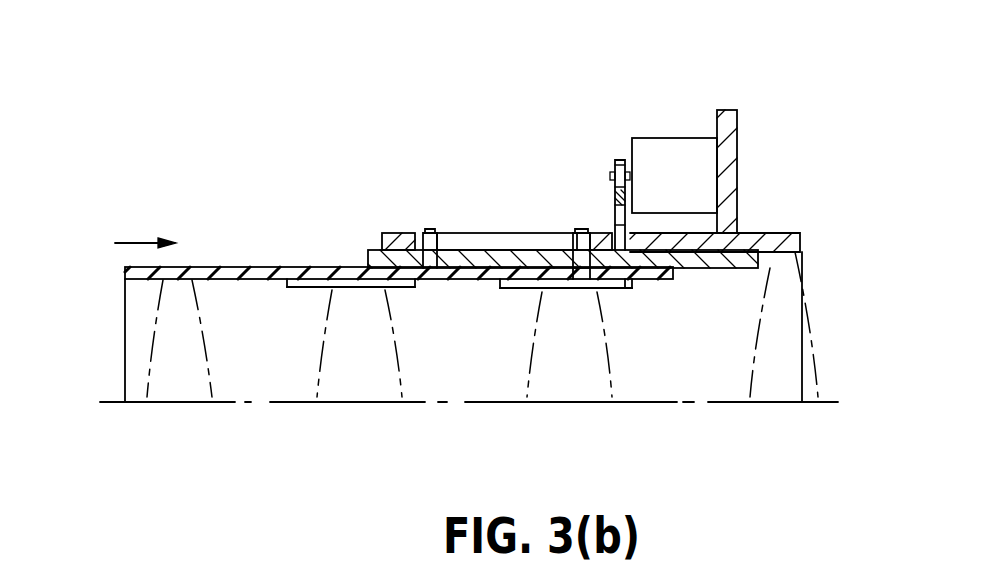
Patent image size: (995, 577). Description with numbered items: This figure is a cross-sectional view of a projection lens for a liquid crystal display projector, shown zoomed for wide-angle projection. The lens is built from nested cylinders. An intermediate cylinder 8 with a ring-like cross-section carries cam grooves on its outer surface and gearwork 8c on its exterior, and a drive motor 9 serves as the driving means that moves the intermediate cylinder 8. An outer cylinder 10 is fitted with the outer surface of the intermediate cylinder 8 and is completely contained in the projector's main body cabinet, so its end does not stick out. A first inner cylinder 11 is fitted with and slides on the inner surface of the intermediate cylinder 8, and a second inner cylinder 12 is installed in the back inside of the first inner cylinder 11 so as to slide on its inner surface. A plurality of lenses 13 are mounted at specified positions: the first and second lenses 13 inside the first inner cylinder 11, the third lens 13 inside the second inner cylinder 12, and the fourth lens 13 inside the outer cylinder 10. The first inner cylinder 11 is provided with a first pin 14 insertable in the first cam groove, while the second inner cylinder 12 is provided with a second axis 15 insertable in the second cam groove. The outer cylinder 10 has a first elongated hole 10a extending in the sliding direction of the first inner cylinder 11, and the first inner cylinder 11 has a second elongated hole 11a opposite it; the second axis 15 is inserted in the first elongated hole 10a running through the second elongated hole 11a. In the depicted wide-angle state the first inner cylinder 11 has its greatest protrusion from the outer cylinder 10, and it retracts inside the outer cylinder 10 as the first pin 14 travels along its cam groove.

The intermediate cylinder 8 is at (372, 255).
The gearwork 8c is at (620, 207).
The drive motor 9 is at (685, 155).
The outer cylinder 10 is at (732, 152).
The first elongated hole 10a is at (488, 240).
The first inner cylinder 11 is at (260, 272).
The second elongated hole 11a is at (543, 279).
The second inner cylinder 12 is at (618, 283).
The lenses 13 is at (180, 380).
The first pin 14 is at (432, 237).
The second axis 15 is at (577, 235).